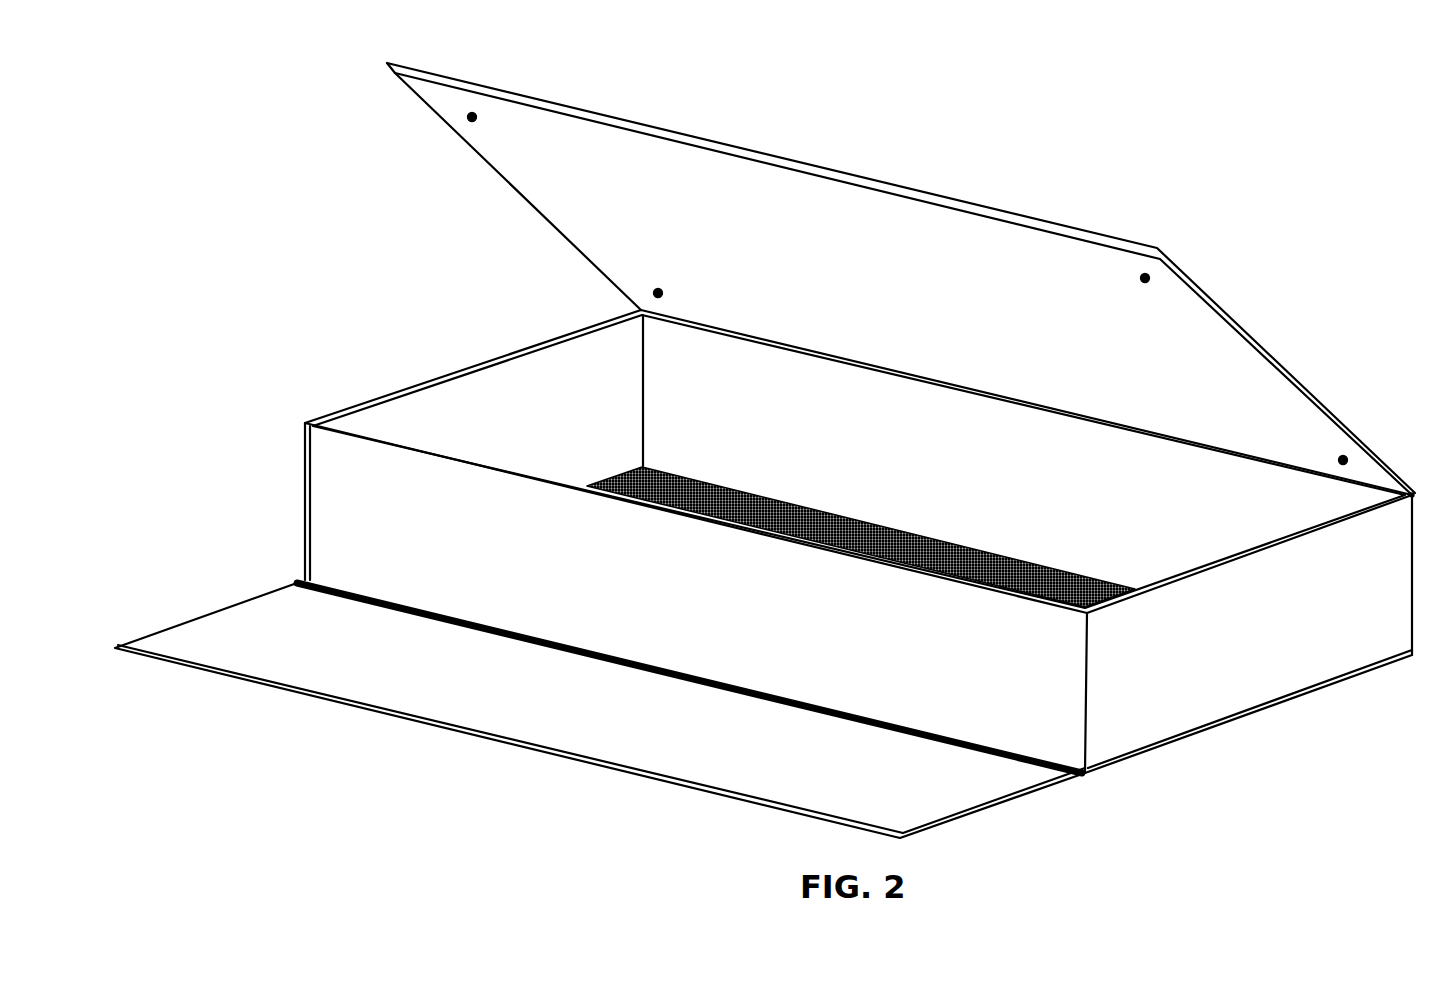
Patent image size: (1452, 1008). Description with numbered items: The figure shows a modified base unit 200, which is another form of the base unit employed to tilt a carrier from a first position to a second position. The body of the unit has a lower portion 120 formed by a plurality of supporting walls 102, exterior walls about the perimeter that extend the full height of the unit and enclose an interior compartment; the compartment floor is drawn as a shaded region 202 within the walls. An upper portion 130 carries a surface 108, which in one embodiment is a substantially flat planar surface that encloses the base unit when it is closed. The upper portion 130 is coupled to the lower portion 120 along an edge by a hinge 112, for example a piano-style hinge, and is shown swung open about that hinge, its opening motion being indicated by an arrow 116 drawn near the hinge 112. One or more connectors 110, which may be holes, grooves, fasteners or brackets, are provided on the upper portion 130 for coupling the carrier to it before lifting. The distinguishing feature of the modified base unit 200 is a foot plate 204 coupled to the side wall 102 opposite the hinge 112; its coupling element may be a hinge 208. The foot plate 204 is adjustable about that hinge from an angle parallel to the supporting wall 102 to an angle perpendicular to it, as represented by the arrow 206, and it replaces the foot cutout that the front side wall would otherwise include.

The modified base unit 200 is at (1103, 123).
The surface 108 is at (901, 279).
The connectors 110 is at (472, 117).
The upper portion 130 is at (490, 202).
The supporting walls 102 is at (858, 541).
The floor 202 is at (1014, 576).
The foot plate 204 is at (600, 710).
The hinge 208 is at (297, 583).
The lower portion 120 is at (286, 502).
The hinge 112 is at (1412, 498).
The lid rotation direction 116 is at (1327, 505).
The arrow 206 is at (1045, 652).